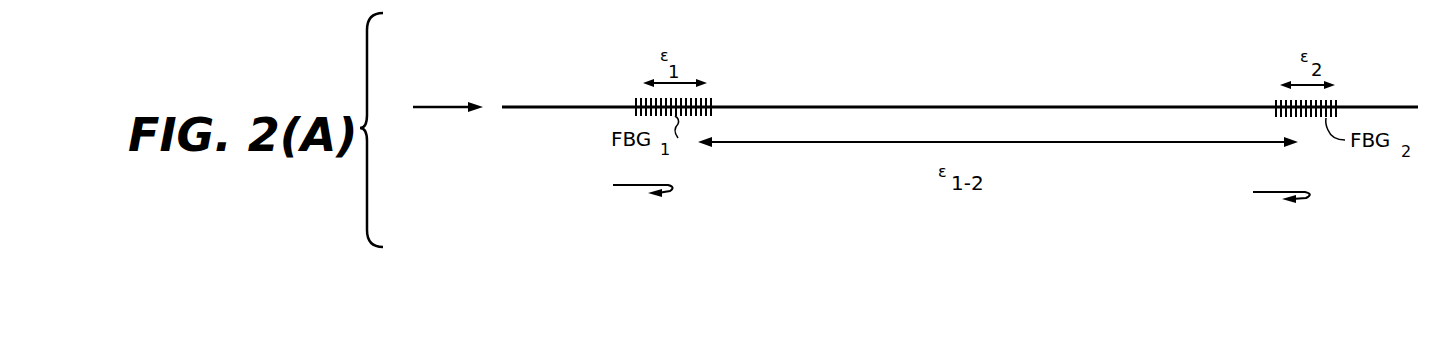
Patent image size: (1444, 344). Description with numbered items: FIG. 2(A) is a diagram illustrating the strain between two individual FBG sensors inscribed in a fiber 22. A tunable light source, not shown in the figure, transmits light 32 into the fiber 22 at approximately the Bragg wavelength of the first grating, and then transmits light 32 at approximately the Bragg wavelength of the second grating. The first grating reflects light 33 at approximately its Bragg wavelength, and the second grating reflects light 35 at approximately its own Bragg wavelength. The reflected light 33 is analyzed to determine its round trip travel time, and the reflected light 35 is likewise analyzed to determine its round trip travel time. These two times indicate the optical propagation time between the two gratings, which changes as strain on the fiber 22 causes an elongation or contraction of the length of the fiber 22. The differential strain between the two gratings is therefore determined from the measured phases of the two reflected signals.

The light 32 is at (443, 107).
The fiber 22 is at (1380, 108).
The light 33 is at (674, 192).
The light 35 is at (1308, 189).